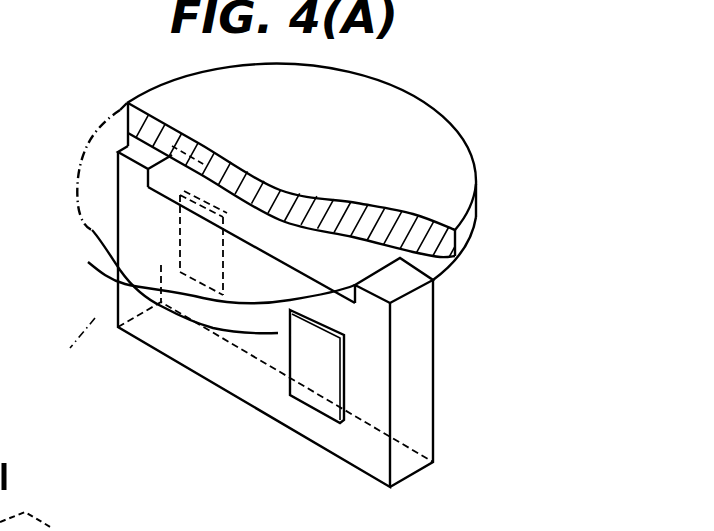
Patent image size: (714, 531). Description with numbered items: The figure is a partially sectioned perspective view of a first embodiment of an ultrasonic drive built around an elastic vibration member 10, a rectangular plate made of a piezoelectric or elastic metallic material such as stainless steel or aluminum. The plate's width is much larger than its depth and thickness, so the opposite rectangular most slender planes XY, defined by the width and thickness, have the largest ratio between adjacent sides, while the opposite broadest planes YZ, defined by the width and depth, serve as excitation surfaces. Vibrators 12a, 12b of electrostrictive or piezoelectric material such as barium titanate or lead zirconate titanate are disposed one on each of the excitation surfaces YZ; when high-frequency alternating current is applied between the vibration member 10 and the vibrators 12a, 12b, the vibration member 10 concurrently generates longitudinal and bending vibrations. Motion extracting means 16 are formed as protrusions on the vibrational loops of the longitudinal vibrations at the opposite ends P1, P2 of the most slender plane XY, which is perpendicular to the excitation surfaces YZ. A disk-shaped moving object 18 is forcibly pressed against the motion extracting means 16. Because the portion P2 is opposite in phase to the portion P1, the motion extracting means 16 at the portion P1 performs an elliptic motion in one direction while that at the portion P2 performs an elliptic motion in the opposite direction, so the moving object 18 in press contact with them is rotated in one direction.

The elastic vibration member 10 is at (240, 399).
The vibrator 12a is at (178, 244).
The vibrator 12b is at (313, 380).
The motion extracting means 16 is at (130, 172).
The moving object 18 is at (355, 115).
The end portion P1 is at (395, 287).
The end portion P2 is at (133, 148).
The most slender plane XY is at (168, 186).
The excitation surface YZ is at (185, 350).